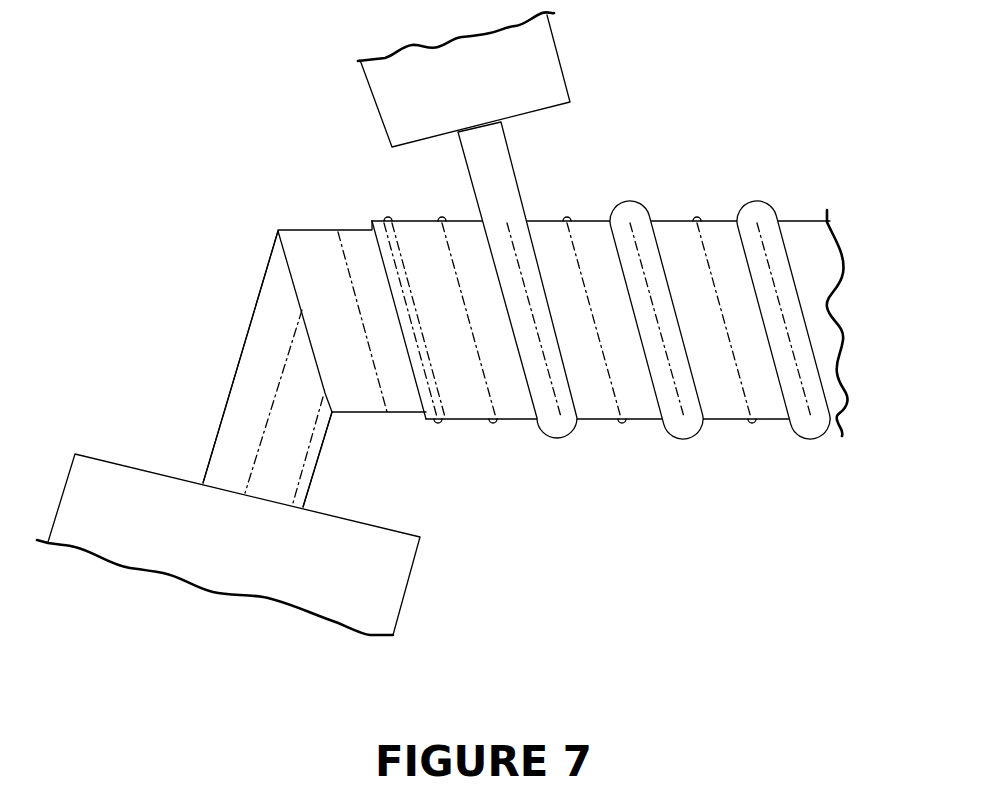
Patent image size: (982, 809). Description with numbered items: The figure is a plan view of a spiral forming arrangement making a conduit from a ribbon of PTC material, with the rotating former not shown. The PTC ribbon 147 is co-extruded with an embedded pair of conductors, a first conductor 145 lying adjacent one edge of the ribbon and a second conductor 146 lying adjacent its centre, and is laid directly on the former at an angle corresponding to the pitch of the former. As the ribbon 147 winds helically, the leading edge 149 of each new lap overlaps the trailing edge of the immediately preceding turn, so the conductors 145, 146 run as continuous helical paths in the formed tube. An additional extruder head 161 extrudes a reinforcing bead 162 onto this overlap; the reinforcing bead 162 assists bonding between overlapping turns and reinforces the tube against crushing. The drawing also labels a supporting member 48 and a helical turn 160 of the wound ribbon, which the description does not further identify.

The frame member 48 is at (413, 575).
The first conductor 145 is at (308, 460).
The second conductor 146 is at (277, 385).
The PTC ribbon 147 is at (225, 400).
The leading edge 149 is at (315, 485).
The screw 160 is at (325, 392).
The additional extruder head 161 is at (565, 80).
The reinforcing bead 162 is at (515, 250).